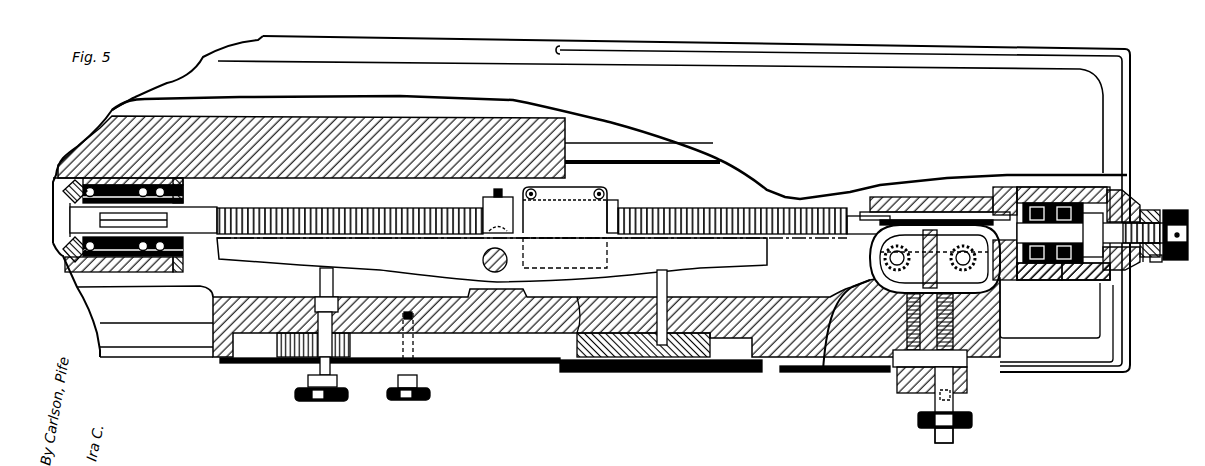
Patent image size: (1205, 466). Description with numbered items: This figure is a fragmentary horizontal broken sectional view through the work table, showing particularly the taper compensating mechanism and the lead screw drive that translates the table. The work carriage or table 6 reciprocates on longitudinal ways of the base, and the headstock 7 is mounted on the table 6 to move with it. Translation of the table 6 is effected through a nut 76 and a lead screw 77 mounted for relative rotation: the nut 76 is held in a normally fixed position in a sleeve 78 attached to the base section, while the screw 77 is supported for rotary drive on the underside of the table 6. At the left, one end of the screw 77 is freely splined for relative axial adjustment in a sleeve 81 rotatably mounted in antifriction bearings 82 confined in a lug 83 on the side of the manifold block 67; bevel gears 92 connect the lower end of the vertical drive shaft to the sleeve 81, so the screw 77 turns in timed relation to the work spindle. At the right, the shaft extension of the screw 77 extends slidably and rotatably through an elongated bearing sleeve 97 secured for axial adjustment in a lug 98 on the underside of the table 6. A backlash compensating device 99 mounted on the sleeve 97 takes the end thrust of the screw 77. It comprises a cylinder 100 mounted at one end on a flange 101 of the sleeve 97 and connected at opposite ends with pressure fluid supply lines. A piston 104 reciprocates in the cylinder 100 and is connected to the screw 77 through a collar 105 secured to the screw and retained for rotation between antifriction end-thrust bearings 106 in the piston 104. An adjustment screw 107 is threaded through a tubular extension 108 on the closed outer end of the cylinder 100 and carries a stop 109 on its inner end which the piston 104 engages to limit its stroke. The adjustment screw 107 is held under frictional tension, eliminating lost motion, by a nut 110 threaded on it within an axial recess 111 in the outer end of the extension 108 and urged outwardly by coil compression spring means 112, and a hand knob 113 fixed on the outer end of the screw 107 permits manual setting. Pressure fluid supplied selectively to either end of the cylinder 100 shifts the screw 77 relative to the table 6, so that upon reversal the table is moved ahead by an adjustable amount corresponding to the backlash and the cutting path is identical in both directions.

The work carriage or table 6 is at (858, 47).
The headstock 7 is at (910, 73).
The manifold block 67 is at (367, 126).
The nut 76 is at (614, 203).
The lead screw 77 is at (388, 211).
The sleeve 78 is at (585, 192).
The sleeve 81 is at (192, 204).
The antifriction bearings 82 is at (158, 258).
The lug 83 is at (112, 272).
The bevel gears 92 is at (68, 254).
The bearing sleeve 97 is at (955, 211).
The lug 98 is at (897, 197).
The backlash compensating device 99 is at (1125, 197).
The cylinder 100 is at (1057, 196).
The flange 101 is at (1005, 187).
The piston 104 is at (1060, 283).
The collar 105 is at (1033, 283).
The antifriction end-thrust bearings 106 is at (1037, 206).
The adjustment screw 107 is at (1138, 258).
The tubular extension 108 is at (1143, 212).
The stop 109 is at (1093, 272).
The nut 110 is at (1156, 263).
The axial recess 111 is at (1143, 264).
The coil compression spring means 112 is at (1130, 216).
The hand knob 113 is at (1180, 210).